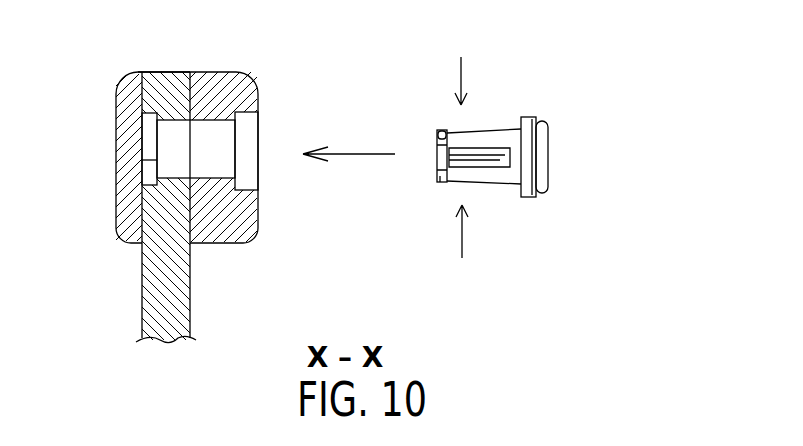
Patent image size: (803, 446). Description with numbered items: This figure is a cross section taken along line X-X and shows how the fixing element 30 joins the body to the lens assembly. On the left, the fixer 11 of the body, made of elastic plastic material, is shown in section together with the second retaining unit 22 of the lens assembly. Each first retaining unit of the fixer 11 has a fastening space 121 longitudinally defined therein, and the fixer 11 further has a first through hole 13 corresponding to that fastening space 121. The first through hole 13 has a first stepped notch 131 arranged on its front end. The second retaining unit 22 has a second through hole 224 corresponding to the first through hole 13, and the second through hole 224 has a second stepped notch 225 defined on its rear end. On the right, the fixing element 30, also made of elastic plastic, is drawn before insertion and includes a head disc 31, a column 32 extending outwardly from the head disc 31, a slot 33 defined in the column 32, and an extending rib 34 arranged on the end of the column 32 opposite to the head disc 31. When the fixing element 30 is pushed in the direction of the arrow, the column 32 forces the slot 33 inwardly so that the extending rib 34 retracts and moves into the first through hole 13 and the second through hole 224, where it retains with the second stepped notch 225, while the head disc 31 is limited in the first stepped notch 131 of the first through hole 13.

The fixer 11 is at (221, 72).
The fastening space 121 is at (150, 72).
The first through hole 13 is at (213, 145).
The first stepped notch 131 is at (258, 165).
The second retaining unit 22 is at (160, 238).
The second through hole 224 is at (154, 132).
The second stepped notch 225 is at (150, 160).
The fixing element 30 is at (499, 152).
The head disc 31 is at (548, 152).
The column 32 is at (473, 180).
The slot 33 is at (492, 168).
The extending rib 34 is at (437, 180).